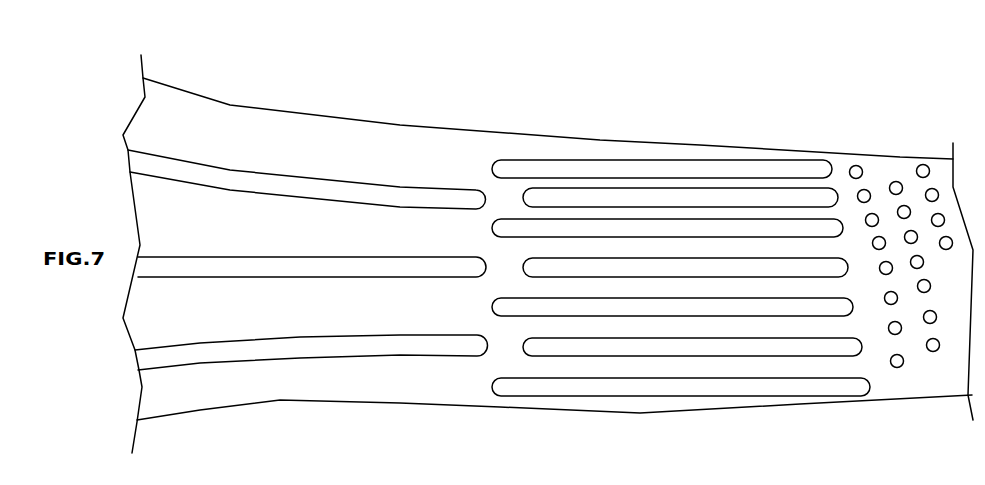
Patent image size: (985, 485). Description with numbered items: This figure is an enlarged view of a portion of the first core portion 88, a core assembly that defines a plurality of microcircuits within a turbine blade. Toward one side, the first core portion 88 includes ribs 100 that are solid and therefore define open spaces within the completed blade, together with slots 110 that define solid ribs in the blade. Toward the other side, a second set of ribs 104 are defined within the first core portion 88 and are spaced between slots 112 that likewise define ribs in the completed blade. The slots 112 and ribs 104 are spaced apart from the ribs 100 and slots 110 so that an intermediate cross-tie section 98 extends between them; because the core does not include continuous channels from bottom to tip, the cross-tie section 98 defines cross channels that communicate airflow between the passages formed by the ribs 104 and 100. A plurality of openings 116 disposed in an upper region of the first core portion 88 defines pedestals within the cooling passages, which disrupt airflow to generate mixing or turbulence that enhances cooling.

The first core portion 88 is at (548, 254).
The cross-tie section 98 is at (503, 277).
The ribs 100 is at (350, 237).
The second set of ribs 104 is at (642, 253).
The slots 110 is at (280, 187).
The slots 112 is at (570, 227).
The openings 116 is at (845, 137).